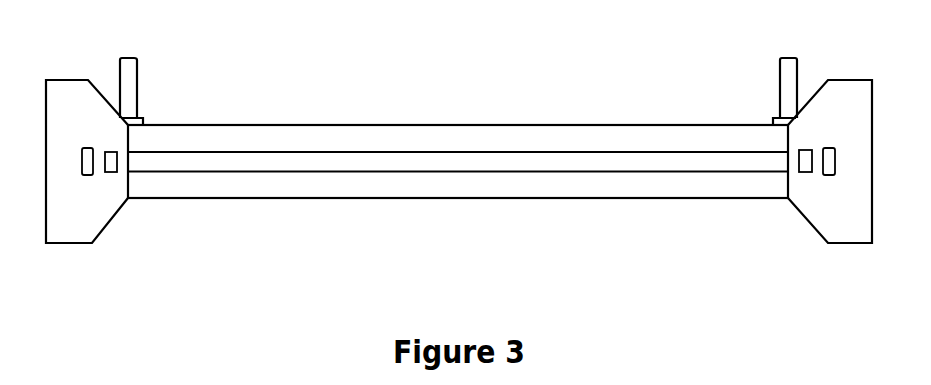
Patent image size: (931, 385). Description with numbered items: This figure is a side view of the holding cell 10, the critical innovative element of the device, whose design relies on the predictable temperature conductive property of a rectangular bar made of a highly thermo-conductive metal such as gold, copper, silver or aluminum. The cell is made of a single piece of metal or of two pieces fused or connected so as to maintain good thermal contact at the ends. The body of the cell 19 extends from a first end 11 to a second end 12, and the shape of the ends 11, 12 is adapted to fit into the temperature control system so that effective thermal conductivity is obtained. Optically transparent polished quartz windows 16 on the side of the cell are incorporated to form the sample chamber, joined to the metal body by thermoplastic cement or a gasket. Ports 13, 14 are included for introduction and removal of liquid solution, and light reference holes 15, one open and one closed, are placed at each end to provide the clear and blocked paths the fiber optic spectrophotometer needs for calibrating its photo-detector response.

The holding cell 10 is at (458, 185).
The first end 11 is at (70, 120).
The second end 12 is at (847, 100).
The port 13 is at (127, 88).
The port 14 is at (785, 82).
The light reference holes 15 is at (110, 158).
The optically transparent polished quartz windows 16 is at (545, 160).
The body of the cell 19 is at (457, 138).